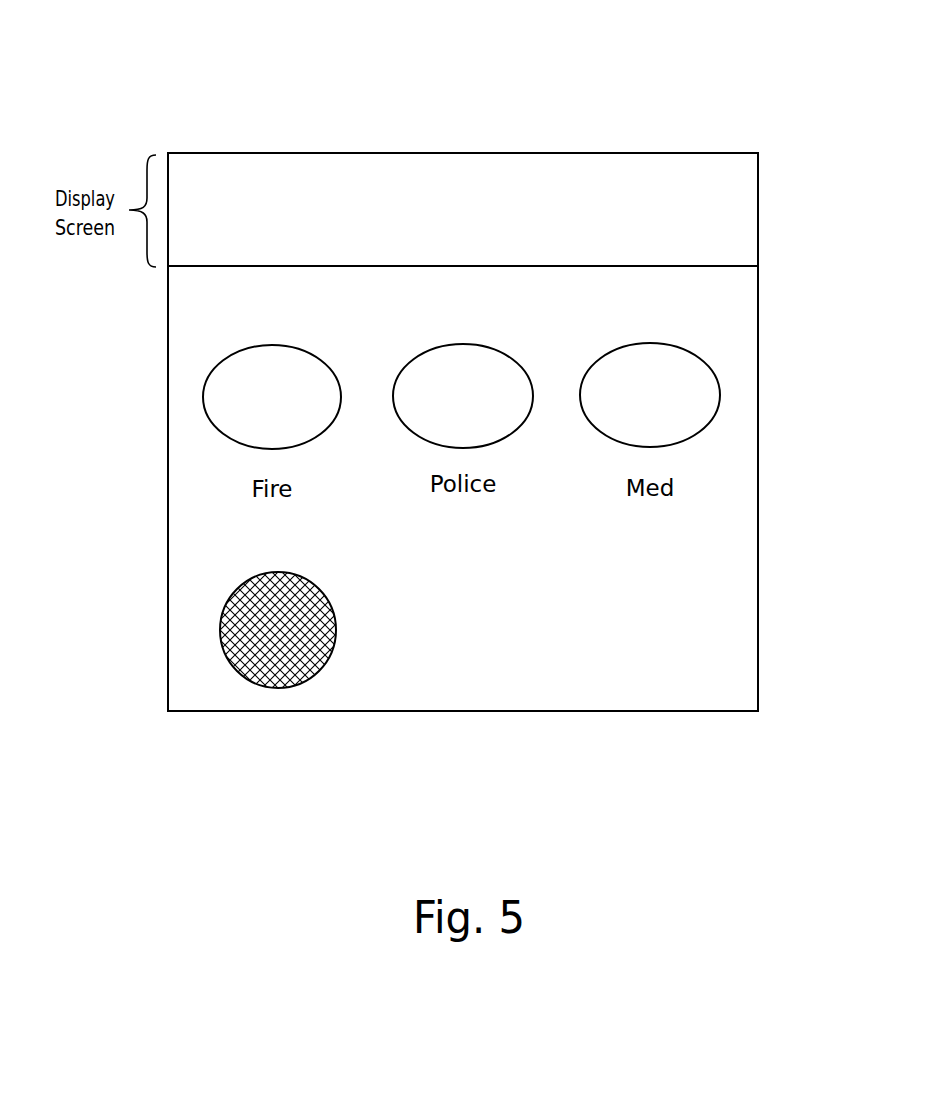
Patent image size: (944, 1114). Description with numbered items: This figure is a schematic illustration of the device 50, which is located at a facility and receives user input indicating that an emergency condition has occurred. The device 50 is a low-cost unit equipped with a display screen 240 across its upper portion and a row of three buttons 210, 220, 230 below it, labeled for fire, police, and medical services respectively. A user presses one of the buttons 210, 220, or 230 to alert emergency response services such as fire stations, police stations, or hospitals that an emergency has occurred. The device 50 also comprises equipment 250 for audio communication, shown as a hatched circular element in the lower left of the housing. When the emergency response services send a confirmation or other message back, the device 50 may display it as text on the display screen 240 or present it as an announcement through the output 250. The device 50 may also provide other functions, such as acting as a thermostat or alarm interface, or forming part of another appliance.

The device 50 is at (195, 68).
The display screen 240 is at (563, 187).
The button 210 is at (293, 410).
The button 220 is at (441, 410).
The button 230 is at (628, 410).
The equipment for audio communication 250 is at (262, 688).